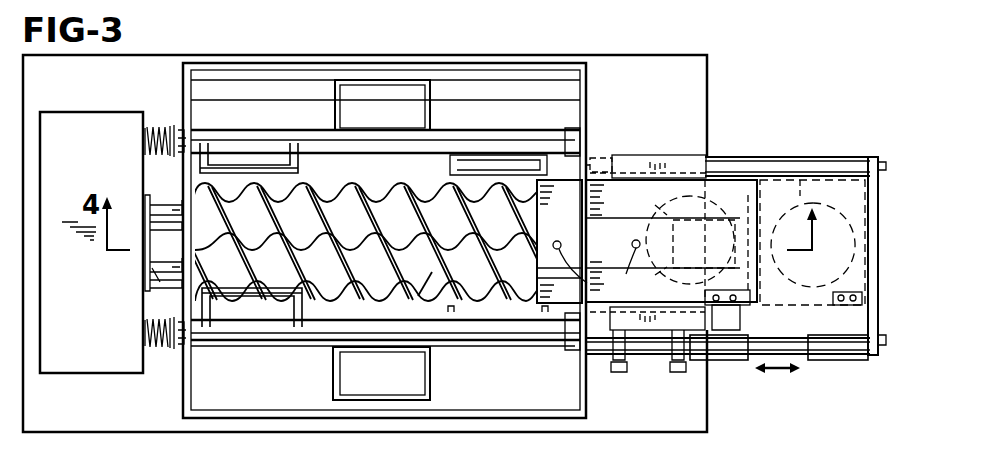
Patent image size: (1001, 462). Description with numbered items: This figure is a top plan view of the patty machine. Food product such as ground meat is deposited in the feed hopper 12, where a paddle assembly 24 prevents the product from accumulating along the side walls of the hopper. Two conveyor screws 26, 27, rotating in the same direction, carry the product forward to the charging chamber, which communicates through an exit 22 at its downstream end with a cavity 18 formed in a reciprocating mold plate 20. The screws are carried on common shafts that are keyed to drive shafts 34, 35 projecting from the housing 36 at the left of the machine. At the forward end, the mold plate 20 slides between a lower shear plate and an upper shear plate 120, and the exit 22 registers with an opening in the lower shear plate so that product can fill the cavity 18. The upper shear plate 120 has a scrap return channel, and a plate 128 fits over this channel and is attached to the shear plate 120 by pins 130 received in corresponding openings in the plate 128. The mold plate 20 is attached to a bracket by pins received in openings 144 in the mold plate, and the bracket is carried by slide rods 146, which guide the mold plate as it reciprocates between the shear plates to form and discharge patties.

The feed hopper 12 is at (320, 66).
The housing 36 is at (99, 113).
The drive shaft 34 is at (157, 212).
The drive shaft 35 is at (155, 276).
The paddle assembly 24 is at (276, 166).
The conveyor screw 26 is at (408, 194).
The conveyor screw 27 is at (420, 292).
The pins 130 is at (584, 284).
The exit 22 is at (668, 216).
The plate 128 is at (626, 254).
The upper shear plate 120 is at (615, 170).
The cavity 18 is at (686, 165).
The mold plate 20 is at (772, 168).
The slide rods 146 is at (738, 362).
The openings 144 is at (846, 350).